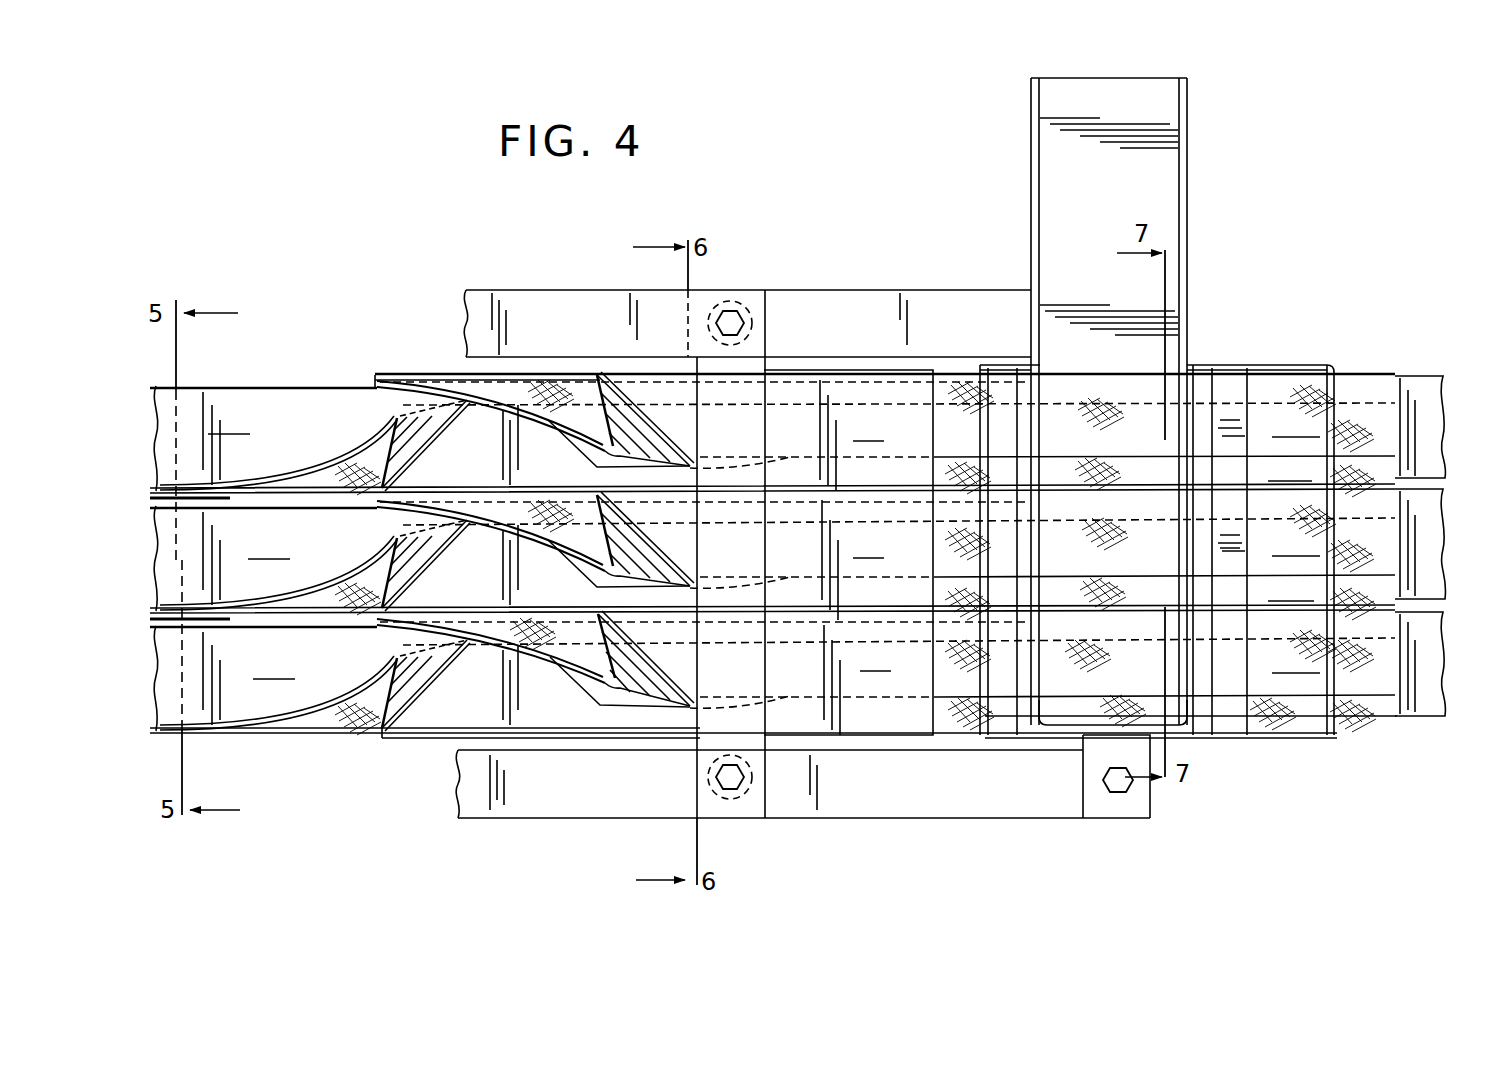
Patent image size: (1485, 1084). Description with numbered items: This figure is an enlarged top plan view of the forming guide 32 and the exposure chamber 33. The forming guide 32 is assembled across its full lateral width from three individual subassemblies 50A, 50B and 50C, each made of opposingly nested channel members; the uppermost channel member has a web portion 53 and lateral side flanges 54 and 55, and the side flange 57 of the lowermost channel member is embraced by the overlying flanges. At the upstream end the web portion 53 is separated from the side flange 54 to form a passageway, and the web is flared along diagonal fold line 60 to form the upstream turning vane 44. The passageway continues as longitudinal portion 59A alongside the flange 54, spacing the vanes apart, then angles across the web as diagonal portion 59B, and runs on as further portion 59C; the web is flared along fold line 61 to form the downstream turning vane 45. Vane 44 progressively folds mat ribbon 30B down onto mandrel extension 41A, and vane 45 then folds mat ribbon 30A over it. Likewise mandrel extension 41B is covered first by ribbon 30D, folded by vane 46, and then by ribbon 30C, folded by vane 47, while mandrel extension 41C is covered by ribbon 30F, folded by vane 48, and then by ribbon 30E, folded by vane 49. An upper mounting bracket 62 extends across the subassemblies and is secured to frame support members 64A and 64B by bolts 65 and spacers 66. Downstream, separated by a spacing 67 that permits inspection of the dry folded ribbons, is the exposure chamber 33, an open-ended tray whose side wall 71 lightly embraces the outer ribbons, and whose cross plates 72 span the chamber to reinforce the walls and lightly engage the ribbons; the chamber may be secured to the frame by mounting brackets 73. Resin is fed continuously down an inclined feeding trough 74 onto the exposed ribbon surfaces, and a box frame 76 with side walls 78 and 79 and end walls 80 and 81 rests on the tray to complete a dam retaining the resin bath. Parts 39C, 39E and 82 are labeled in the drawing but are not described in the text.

The mat ribbon 30A is at (262, 378).
The mat ribbon 30B is at (320, 472).
The mat ribbon 30C is at (302, 509).
The mat ribbon 30D is at (306, 578).
The mat ribbon 30E is at (398, 630).
The mat ribbon 30F is at (300, 728).
The forming guide 32 is at (412, 782).
The exposure chamber 33 is at (1232, 312).
The spacer pin 39C is at (182, 500).
The spacer pin 39E is at (210, 620).
The mandrel extension 41A is at (204, 438).
The mandrel extension 41B is at (224, 558).
The mandrel extension 41C is at (227, 678).
The upstream turning vane 44 is at (389, 437).
The downstream turning vane 45 is at (640, 430).
The vane 46 is at (412, 545).
The vane 47 is at (620, 525).
The vane 48 is at (412, 675).
The vane 49 is at (618, 650).
The subassembly 50A is at (872, 372).
The subassembly 50B is at (898, 547).
The subassembly 50C is at (876, 740).
The web portion 53 is at (848, 552).
The side flange 54 is at (395, 373).
The side flange 55 is at (420, 740).
The side flange 57 is at (373, 378).
The longitudinal portion 59A is at (466, 405).
The diagonal portion 59B is at (596, 402).
The further portion 59C is at (625, 460).
The diagonal fold line 60 is at (435, 430).
The fold line 61 is at (628, 400).
The upper mounting bracket 62 is at (705, 742).
The frame support member 64A is at (905, 295).
The frame support member 64B is at (978, 805).
The bolts 65 is at (738, 325).
The spacers 66 is at (710, 305).
The spacing 67 is at (968, 720).
The side wall 71 is at (1160, 726).
The cross plates 72 is at (995, 383).
The mounting brackets 73 is at (1130, 810).
The feeding trough 74 is at (1162, 170).
The box frame 76 is at (1228, 738).
The side wall 78 is at (1278, 366).
The side wall 79 is at (1272, 735).
The end wall 80 is at (982, 448).
The end wall 81 is at (1338, 384).
The clamp block 82 is at (1090, 722).